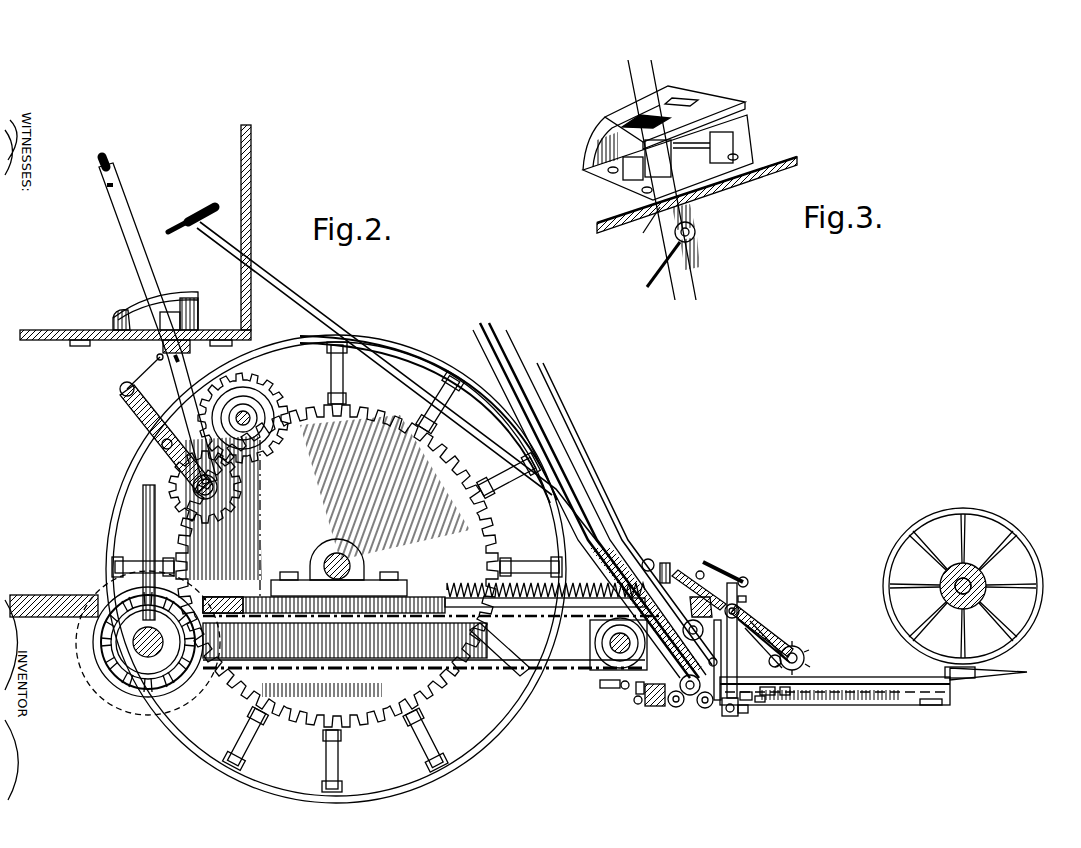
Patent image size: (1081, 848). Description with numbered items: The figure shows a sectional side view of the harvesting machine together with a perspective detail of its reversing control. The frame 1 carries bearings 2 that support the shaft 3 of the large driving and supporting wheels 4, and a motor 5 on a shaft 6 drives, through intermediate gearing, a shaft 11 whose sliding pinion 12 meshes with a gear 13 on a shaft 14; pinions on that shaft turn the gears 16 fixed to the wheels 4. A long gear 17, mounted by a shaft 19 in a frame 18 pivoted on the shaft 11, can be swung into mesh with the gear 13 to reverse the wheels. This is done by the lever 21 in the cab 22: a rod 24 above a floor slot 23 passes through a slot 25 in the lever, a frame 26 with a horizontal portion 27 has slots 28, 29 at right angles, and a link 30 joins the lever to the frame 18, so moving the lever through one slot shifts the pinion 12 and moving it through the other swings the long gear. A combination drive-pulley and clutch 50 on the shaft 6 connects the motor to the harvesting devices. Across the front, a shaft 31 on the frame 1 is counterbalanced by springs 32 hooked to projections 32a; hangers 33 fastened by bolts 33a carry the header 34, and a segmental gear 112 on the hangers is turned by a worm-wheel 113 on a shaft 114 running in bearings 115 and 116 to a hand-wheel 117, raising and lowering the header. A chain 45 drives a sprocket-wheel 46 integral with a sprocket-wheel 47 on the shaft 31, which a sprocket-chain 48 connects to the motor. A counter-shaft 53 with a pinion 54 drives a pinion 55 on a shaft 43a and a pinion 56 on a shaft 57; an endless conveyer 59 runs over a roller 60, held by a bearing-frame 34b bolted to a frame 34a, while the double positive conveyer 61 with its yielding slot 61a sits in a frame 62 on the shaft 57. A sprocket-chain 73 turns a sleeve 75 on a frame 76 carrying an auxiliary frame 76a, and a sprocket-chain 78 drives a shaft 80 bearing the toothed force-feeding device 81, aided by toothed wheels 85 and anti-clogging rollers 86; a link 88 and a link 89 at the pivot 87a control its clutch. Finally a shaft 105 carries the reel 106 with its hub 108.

In FIG. 2, the frame 1 is at (60, 595).
In FIG. 2, the bearings 2 is at (368, 576).
In FIG. 2, the shaft 3 is at (350, 560).
In FIG. 2, the driving and supporting wheels 4 is at (480, 742).
In FIG. 2, the motor 5 is at (98, 688).
In FIG. 2, the shaft 6 is at (137, 657).
In FIG. 2, the shaft 11 is at (196, 490).
In FIG. 2, the pinion 12 is at (224, 505).
In FIG. 2, the gear 13 is at (266, 396).
In FIG. 2, the shaft 14 is at (247, 412).
In FIG. 2, the gears 16 is at (472, 475).
In FIG. 2, the long gear 17 is at (150, 486).
In FIG. 2, the frame 18 is at (150, 425).
In FIG. 2, the shaft 19 is at (162, 445).
In FIG. 2, the lever 21 is at (195, 378).
In FIG. 3, the lever 21 is at (700, 262).
In FIG. 2, the cab 22 is at (252, 187).
In FIG. 3, the cab 22 is at (607, 192).
In FIG. 2, the slot 23 is at (178, 353).
In FIG. 3, the slot 23 is at (705, 165).
In FIG. 2, the rod 24 is at (200, 315).
In FIG. 3, the rod 24 is at (733, 144).
In FIG. 3, the slot 25 is at (643, 233).
In FIG. 2, the frame 26 is at (113, 318).
In FIG. 3, the frame 26 is at (590, 155).
In FIG. 2, the horizontal portion 27 is at (178, 294).
In FIG. 3, the horizontal portion 27 is at (728, 98).
In FIG. 3, the slot 28 is at (684, 97).
In FIG. 3, the slot 29 is at (603, 126).
In FIG. 2, the link 30 is at (142, 380).
In FIG. 3, the link 30 is at (658, 284).
In FIG. 2, the shaft or cylinder 31 is at (625, 674).
In FIG. 2, the springs 32 is at (525, 560).
In FIG. 2, the projections 32a is at (700, 571).
In FIG. 2, the hangers 33 is at (636, 704).
In FIG. 2, the bolts 33a is at (640, 694).
In FIG. 2, the header 34 is at (746, 701).
In FIG. 2, the frame 34a is at (742, 713).
In FIG. 2, the bearing-frame 34b is at (930, 705).
In FIG. 2, the shaft 43a is at (713, 668).
In FIG. 2, the chain 45 is at (624, 689).
In FIG. 2, the sprocket-wheel 46 is at (610, 688).
In FIG. 2, the sprocket-wheel 47 is at (596, 648).
In FIG. 2, the sprocket-chain 48 is at (522, 677).
In FIG. 2, the combination drive-pulley and clutch 50 is at (160, 655).
In FIG. 2, the counter-shaft 53 is at (738, 714).
In FIG. 2, the pinion 54 is at (712, 706).
In FIG. 2, the pinion 55 is at (655, 706).
In FIG. 2, the pinion 56 is at (679, 708).
In FIG. 2, the shaft 57 is at (686, 696).
In FIG. 2, the endless conveyer 59 is at (888, 700).
In FIG. 2, the roller 60 is at (950, 705).
In FIG. 2, the positive conveyer (elevator) 61 is at (556, 448).
In FIG. 2, the slot 61a is at (762, 702).
In FIG. 2, the frame 62 is at (598, 497).
In FIG. 2, the sprocket-chain 73 is at (772, 628).
In FIG. 2, the sleeve 75 is at (760, 624).
In FIG. 2, the frame 76 is at (792, 651).
In FIG. 2, the auxiliary frame 76a is at (796, 640).
In FIG. 2, the sprocket-chain 78 is at (772, 620).
In FIG. 2, the shaft 80 is at (805, 654).
In FIG. 2, the force-feeding device 81 is at (805, 661).
In FIG. 2, the toothed wheel 85 is at (786, 695).
In FIG. 2, the rollers 86 is at (769, 661).
In FIG. 2, the pivot 87a is at (740, 608).
In FIG. 2, the link 88 is at (743, 577).
In FIG. 2, the link 89 is at (770, 695).
In FIG. 2, the shaft 105 is at (968, 578).
In FIG. 2, the reel 106 is at (1030, 550).
In FIG. 2, the wheel hub 108 is at (986, 578).
In FIG. 2, the segmental gear 112 is at (712, 586).
In FIG. 2, the worm-wheel 113 is at (666, 563).
In FIG. 2, the shaft 114 is at (648, 559).
In FIG. 2, the bearing 115 is at (740, 585).
In FIG. 2, the bearing 116 is at (240, 248).
In FIG. 2, the hand-wheel 117 is at (205, 213).